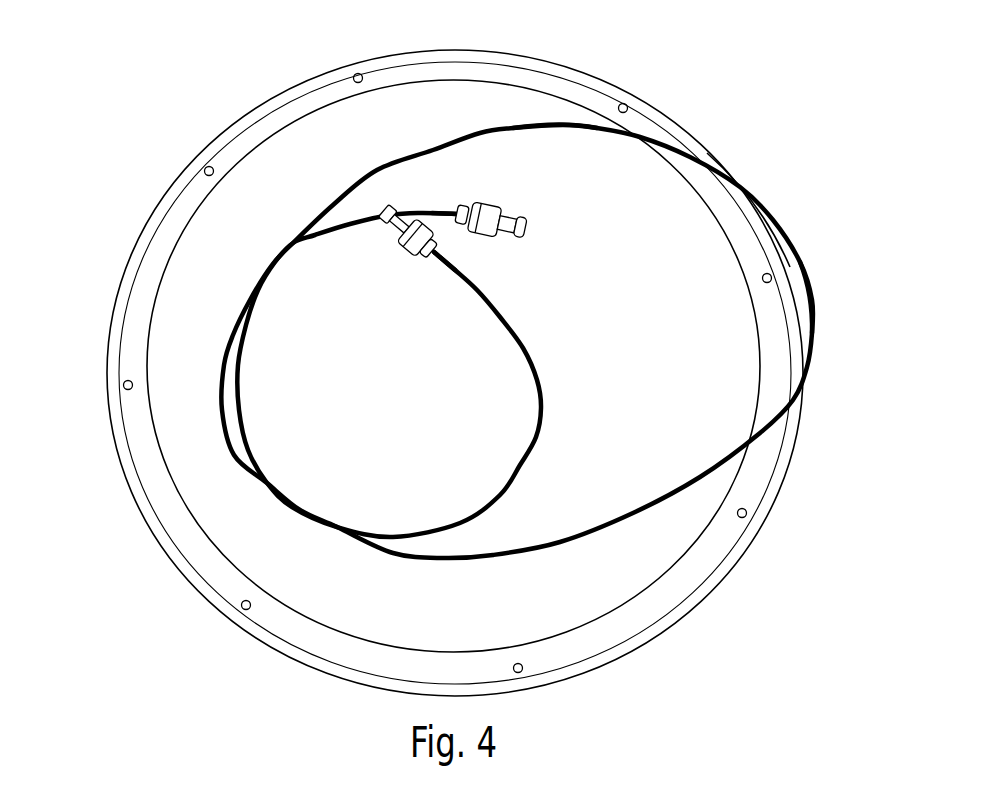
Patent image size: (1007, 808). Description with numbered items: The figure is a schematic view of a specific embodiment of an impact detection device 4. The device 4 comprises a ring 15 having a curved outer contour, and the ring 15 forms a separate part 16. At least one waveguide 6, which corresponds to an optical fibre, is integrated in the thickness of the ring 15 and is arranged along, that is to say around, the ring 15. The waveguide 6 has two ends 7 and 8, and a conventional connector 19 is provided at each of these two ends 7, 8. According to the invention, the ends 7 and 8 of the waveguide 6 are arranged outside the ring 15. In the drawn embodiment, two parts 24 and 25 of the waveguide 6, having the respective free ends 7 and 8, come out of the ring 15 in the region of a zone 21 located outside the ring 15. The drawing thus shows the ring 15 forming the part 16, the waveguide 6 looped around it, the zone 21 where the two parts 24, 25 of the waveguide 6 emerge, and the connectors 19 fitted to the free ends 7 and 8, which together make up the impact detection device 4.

The impact detection device 4 is at (140, 108).
The waveguide 6 is at (376, 168).
The end 7 is at (450, 194).
The end 8 is at (423, 288).
The ring 15 is at (686, 583).
The part 16 is at (224, 641).
The connector 19 is at (485, 215).
The zone 21 is at (758, 153).
The part 24 is at (572, 108).
The part 25 is at (807, 216).